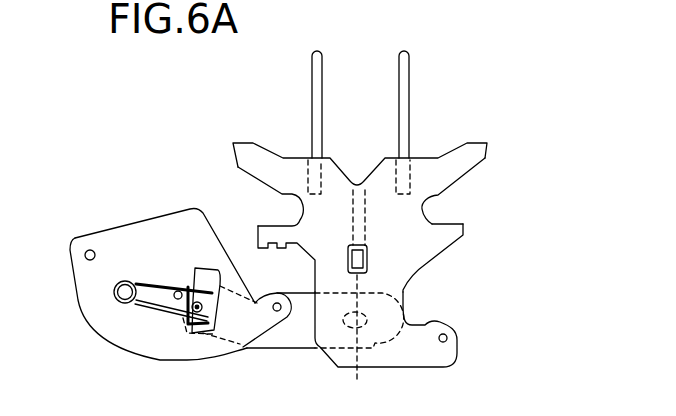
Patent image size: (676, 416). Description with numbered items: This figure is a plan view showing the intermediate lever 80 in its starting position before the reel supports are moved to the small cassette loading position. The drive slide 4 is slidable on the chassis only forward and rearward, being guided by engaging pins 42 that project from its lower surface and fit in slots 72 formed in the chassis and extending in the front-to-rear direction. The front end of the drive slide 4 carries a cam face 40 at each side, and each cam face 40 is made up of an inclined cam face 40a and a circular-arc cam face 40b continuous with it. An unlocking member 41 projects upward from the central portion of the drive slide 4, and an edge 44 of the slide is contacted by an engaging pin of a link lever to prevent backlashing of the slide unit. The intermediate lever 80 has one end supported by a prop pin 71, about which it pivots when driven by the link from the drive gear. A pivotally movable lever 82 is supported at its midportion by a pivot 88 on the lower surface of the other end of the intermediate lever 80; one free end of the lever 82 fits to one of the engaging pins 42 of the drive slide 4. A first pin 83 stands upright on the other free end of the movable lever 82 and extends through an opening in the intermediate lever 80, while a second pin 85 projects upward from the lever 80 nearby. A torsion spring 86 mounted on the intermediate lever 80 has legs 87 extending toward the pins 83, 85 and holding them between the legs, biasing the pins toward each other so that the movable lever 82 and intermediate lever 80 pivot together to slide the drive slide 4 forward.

The drive slide 4 is at (402, 352).
The cam face 40 is at (389, 217).
The inclined cam face 40a is at (472, 172).
The circular-arc cam face 40b is at (279, 212).
The unlocking member 41 is at (367, 258).
The engaging pin 42 is at (310, 182).
The edge 44 is at (467, 312).
The prop pin 71 is at (85, 262).
The slot 72 is at (318, 76).
The intermediate lever 80 is at (120, 235).
The pivotally movable lever 82 is at (290, 350).
The first pin 83 is at (197, 312).
The second pin 85 is at (177, 300).
The torsion spring 86 is at (115, 311).
The leg 87 is at (187, 320).
The pivot 88 is at (277, 303).